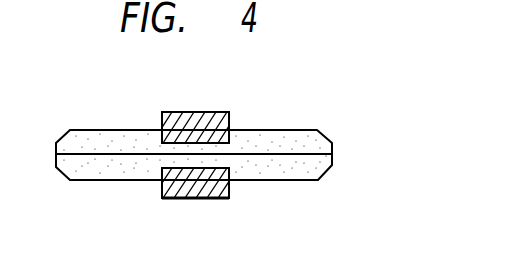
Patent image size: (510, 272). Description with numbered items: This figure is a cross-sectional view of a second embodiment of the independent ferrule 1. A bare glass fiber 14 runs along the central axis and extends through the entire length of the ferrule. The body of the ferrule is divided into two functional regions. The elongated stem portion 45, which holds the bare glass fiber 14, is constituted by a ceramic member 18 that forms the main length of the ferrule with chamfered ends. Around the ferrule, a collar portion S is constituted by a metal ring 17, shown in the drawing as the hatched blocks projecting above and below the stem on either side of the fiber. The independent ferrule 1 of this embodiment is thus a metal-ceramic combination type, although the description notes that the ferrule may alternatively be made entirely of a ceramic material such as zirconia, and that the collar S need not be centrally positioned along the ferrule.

The independent ferrule 1 is at (357, 93).
The bare glass fiber 14 is at (103, 156).
The ceramic member 18 is at (279, 140).
The stem portion 45 is at (280, 175).
The collar portion S is at (197, 112).
The metal ring 17 is at (193, 190).